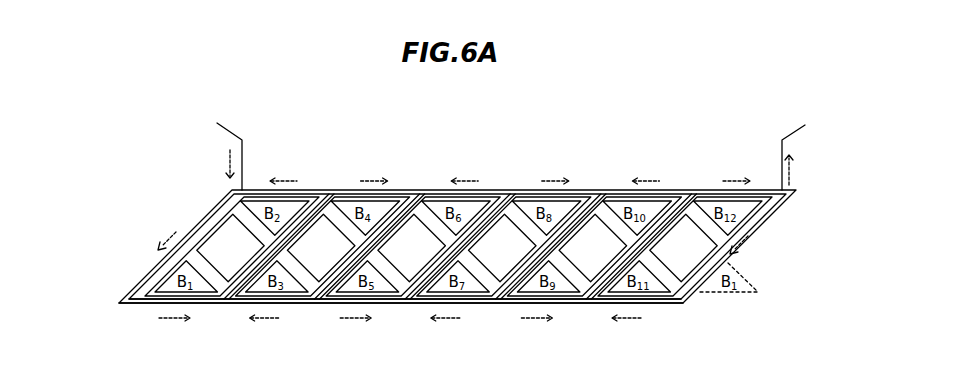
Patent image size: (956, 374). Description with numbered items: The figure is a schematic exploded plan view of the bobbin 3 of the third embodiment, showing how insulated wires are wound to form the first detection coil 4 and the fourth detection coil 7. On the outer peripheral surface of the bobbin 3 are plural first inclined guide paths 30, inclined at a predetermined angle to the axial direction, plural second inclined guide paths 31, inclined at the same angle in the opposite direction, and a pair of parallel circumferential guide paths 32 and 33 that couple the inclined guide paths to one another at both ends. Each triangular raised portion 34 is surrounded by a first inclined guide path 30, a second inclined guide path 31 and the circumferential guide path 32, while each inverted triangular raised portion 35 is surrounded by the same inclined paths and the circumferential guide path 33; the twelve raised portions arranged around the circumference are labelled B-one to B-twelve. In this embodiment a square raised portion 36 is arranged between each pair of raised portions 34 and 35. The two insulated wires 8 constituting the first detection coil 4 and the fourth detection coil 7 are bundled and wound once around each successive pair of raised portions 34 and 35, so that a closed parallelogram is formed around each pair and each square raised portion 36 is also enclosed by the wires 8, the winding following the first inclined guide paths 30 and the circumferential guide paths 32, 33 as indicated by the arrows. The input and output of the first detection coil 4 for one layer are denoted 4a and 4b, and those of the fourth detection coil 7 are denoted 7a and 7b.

The bobbin 3 is at (604, 193).
The first detection coil 4 is at (405, 329).
The fourth detection coil 7 is at (548, 300).
The input of the first detection coil 4a is at (200, 151).
The input of the fourth detection coil 7a is at (200, 151).
The output of the first detection coil 4b is at (820, 150).
The output of the fourth detection coil 7b is at (820, 150).
The insulated wires 8 is at (400, 193).
The first inclined guide paths 30 is at (430, 197).
The second inclined guide paths 31 is at (303, 284).
The circumferential guide path 32 is at (462, 303).
The circumferential guide path 33 is at (484, 193).
The triangular raised portion 34 is at (198, 283).
The inverted triangular raised portion 35 is at (330, 193).
The square raised portion 36 is at (223, 240).